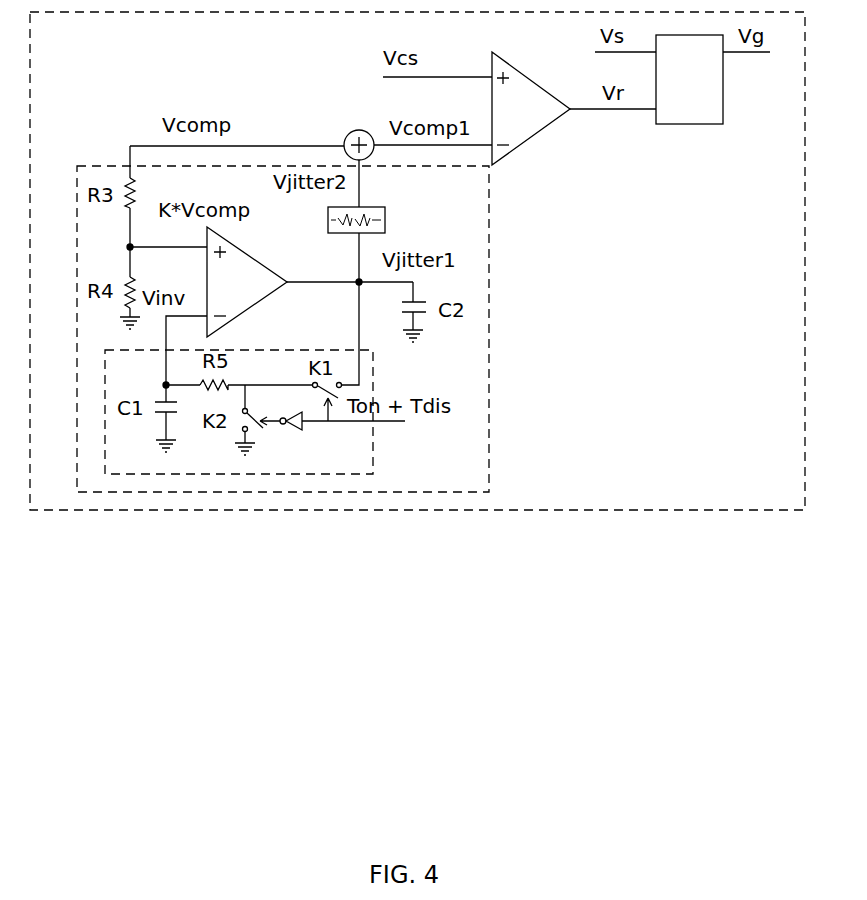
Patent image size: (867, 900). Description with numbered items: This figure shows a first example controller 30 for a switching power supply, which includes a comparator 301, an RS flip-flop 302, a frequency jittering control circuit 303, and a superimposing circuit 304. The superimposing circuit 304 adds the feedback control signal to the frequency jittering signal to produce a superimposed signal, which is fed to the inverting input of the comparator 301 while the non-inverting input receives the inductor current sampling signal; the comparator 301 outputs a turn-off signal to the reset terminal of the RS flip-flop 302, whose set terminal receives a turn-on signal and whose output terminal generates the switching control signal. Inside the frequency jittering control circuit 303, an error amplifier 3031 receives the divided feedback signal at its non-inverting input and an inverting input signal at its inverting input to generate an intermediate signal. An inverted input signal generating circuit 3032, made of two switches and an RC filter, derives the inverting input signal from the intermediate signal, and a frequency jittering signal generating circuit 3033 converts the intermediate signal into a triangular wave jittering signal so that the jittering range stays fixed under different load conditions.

The controller 30 is at (738, 470).
The comparator 301 is at (542, 130).
The RS flip-flop 302 is at (723, 100).
The frequency jittering control circuit 303 is at (489, 383).
The superimposing circuit 304 is at (346, 133).
The error amplifier 3031 is at (268, 303).
The inverted input signal generating circuit 3032 is at (373, 447).
The frequency jittering signal generating circuit 3033 is at (385, 220).